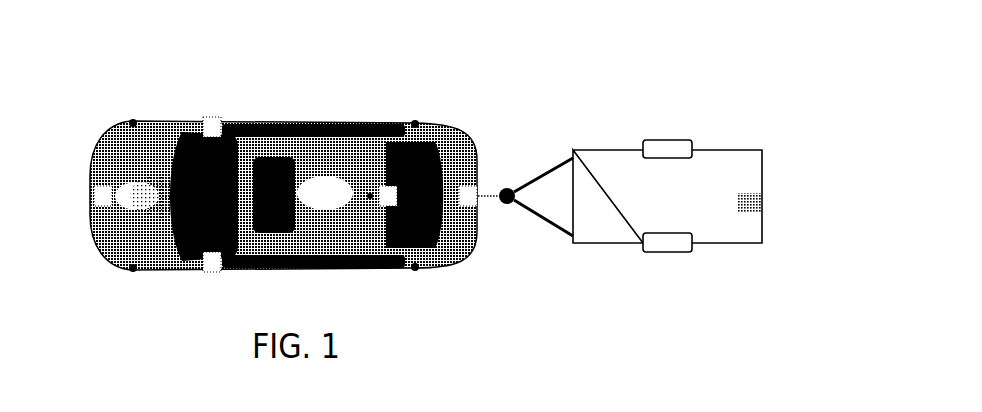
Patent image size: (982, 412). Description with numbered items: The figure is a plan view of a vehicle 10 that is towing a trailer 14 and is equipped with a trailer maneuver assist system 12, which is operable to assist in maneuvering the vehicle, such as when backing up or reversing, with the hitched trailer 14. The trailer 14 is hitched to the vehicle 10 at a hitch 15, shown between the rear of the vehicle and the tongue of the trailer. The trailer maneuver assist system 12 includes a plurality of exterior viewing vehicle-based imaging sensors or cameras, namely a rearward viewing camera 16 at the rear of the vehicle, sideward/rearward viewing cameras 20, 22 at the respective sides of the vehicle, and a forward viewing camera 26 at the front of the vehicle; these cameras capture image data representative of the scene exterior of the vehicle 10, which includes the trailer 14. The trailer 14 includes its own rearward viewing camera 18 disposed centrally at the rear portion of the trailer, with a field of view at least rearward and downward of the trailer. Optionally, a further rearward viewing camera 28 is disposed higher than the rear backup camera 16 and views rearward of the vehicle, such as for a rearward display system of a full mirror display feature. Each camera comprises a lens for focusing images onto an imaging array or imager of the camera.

The vehicle 10 is at (123, 163).
The trailer maneuver assist system 12 is at (148, 308).
The trailer 14 is at (613, 233).
The hitch 15 is at (507, 204).
The rearward viewing camera 16 is at (463, 193).
The rearward viewing camera 18 is at (757, 202).
The sideward/rearward viewing camera 20 is at (208, 274).
The sideward/rearward viewing camera 22 is at (208, 124).
The forward viewing camera 26 is at (100, 197).
The rearward viewing camera 28 is at (387, 193).